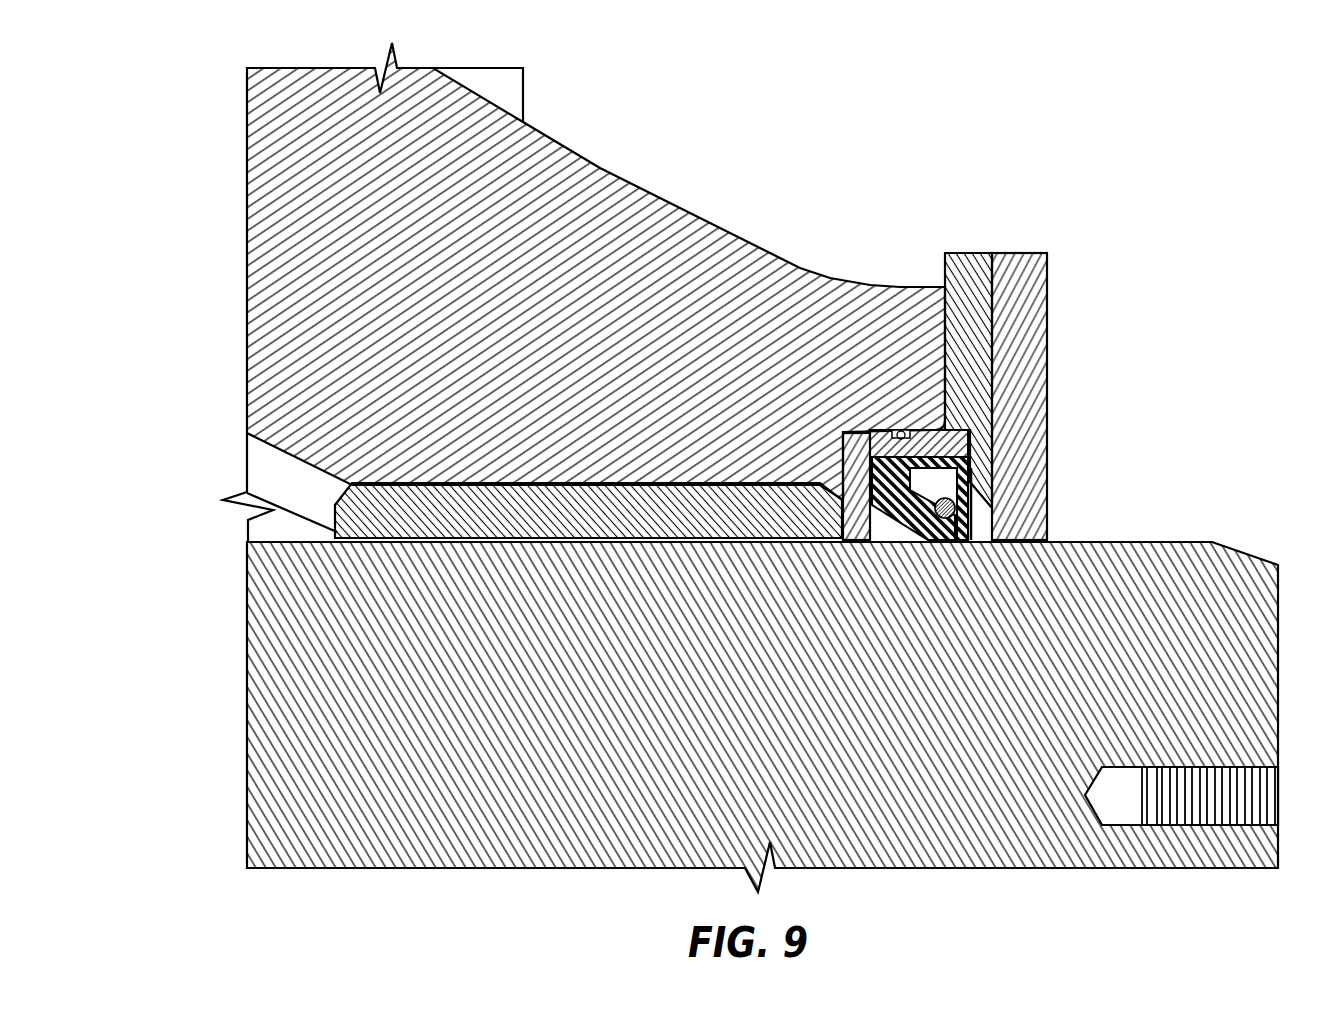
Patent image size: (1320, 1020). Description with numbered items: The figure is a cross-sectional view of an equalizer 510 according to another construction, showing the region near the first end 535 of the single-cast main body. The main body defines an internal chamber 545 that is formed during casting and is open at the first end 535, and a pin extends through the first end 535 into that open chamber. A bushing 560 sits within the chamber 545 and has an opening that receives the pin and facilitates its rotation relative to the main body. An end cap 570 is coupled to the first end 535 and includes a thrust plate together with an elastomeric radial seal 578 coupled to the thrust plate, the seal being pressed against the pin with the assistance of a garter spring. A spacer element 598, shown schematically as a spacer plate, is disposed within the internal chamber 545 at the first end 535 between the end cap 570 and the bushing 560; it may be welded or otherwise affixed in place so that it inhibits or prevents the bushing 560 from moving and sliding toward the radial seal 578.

The equalizer 510 is at (700, 467).
The first end 535 is at (597, 242).
The internal chamber 545 is at (280, 475).
The bushing 560 is at (417, 508).
The end cap 570 is at (1047, 278).
The radial seal 578 is at (913, 477).
The spacer element 598 is at (862, 433).